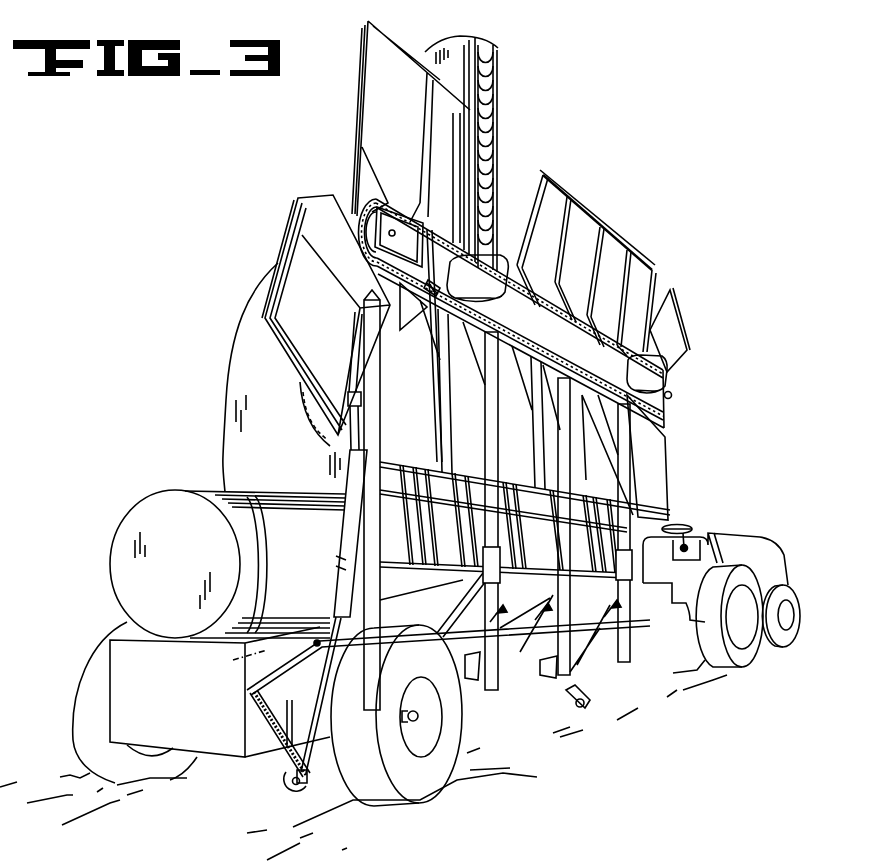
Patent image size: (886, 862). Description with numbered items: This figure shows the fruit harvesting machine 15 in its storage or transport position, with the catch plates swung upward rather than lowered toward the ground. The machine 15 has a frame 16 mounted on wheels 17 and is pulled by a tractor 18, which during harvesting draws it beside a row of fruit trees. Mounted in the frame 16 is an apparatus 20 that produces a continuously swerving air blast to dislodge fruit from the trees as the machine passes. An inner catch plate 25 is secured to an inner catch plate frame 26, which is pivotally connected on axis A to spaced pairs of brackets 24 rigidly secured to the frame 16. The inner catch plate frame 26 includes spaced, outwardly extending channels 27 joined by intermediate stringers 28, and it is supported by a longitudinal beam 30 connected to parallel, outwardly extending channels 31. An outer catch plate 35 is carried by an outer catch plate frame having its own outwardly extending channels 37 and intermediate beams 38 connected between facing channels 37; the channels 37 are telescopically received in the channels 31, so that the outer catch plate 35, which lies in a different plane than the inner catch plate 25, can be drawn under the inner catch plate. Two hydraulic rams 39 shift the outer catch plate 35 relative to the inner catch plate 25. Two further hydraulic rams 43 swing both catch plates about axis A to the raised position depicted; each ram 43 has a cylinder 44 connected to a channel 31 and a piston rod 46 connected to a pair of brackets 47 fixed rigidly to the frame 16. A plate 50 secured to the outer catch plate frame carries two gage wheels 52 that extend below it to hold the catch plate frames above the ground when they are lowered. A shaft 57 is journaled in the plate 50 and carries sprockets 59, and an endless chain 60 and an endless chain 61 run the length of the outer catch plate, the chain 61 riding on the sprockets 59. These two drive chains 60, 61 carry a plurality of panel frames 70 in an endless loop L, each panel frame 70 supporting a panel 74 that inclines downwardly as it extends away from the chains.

The machine 15 is at (165, 410).
The frame 16 is at (221, 755).
The wheels 17 is at (78, 700).
The tractor 18 is at (727, 534).
The apparatus to produce a continuously swerving air blast 20 is at (242, 345).
The brackets 24 is at (270, 678).
The inner catch plate 25 is at (337, 520).
The inner catch plate frame 26 is at (397, 543).
The channels 27 is at (416, 462).
The intermediate stringers 28 is at (447, 596).
The longitudinal beam 30 is at (342, 562).
The channels 31 is at (368, 702).
The outer catch plate 35 is at (333, 462).
The channels 37 is at (380, 412).
The intermediate beams 38 is at (522, 490).
The hydraulic rams 39 is at (548, 632).
The hydraulic rams 43 is at (341, 578).
The cylinder 44 is at (358, 497).
The piston rod 46 is at (325, 768).
The brackets 47 is at (290, 772).
The plate 50 is at (511, 262).
The gage wheels 52 is at (700, 361).
The shaft 57 is at (393, 230).
The sprockets 59 is at (370, 228).
The endless chain 60 is at (348, 200).
The endless chain 61 is at (436, 292).
The panel frames 70 is at (383, 114).
The panel 74 is at (352, 135).
The axis A is at (240, 658).
The endless loop L is at (637, 247).